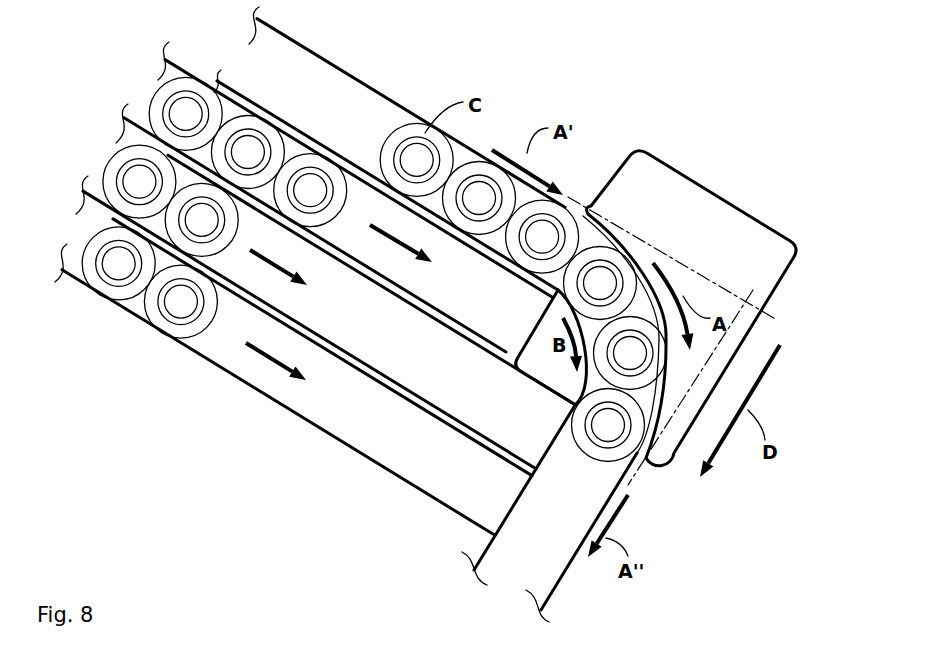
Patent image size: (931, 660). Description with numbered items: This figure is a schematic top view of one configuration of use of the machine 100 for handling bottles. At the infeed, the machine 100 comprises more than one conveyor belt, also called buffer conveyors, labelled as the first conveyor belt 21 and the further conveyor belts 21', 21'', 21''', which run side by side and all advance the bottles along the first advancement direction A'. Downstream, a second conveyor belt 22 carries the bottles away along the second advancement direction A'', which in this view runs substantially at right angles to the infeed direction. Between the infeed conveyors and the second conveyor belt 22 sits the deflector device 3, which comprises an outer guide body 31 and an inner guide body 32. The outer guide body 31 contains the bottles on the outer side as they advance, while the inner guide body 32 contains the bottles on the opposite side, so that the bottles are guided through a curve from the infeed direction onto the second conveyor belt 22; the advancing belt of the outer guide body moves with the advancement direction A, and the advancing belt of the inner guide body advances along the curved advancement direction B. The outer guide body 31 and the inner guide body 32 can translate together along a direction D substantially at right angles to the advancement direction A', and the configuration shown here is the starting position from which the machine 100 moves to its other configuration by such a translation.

The first conveyor belt 21 is at (396, 148).
The conveyor belt 21' is at (311, 180).
The conveyor belt 21'' is at (308, 273).
The conveyor belt 21''' is at (278, 349).
The second conveyor belt 22 is at (548, 603).
The deflector device 3 is at (596, 315).
The outer guide body 31 is at (753, 212).
The inner guide body 32 is at (558, 370).
The machine 100 is at (137, 428).